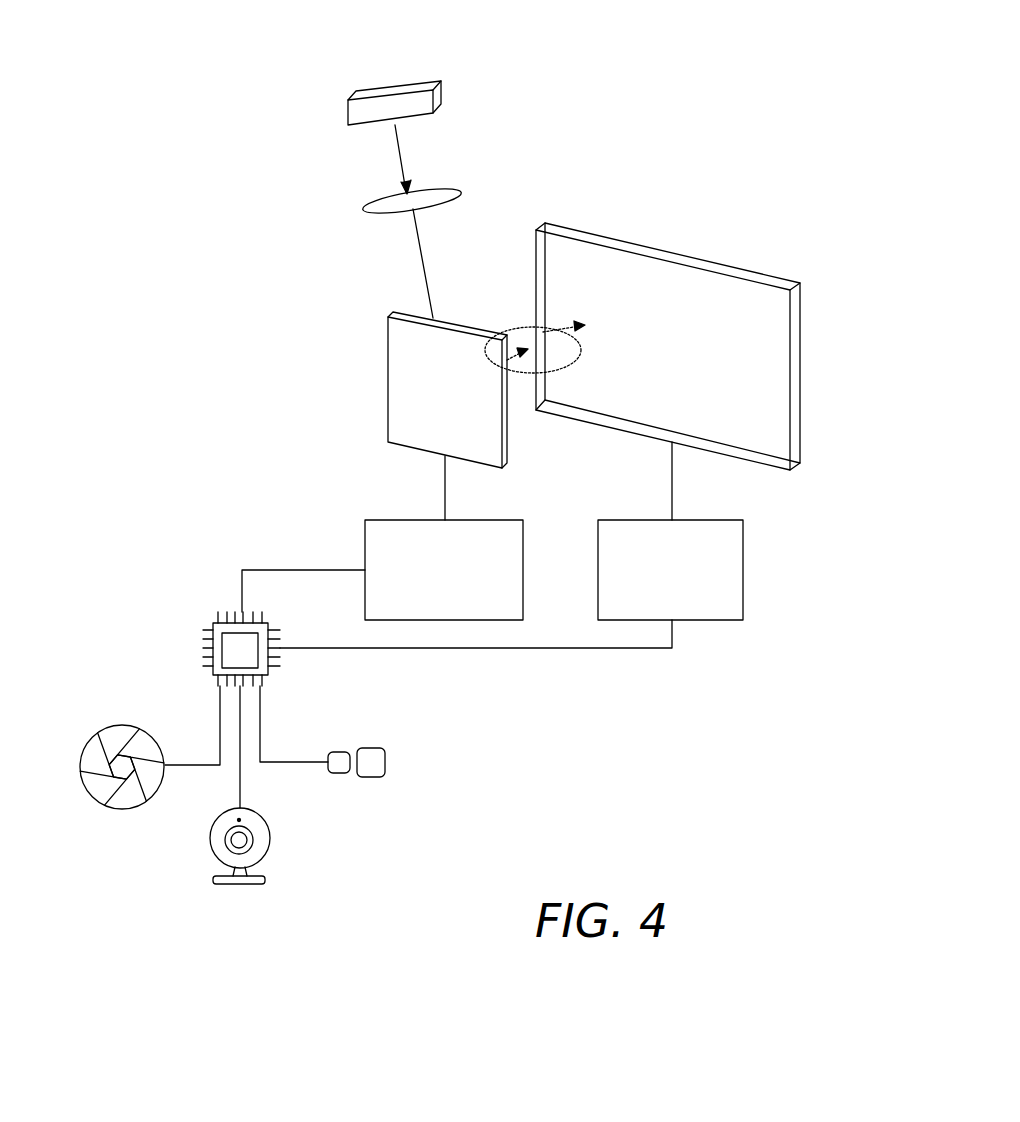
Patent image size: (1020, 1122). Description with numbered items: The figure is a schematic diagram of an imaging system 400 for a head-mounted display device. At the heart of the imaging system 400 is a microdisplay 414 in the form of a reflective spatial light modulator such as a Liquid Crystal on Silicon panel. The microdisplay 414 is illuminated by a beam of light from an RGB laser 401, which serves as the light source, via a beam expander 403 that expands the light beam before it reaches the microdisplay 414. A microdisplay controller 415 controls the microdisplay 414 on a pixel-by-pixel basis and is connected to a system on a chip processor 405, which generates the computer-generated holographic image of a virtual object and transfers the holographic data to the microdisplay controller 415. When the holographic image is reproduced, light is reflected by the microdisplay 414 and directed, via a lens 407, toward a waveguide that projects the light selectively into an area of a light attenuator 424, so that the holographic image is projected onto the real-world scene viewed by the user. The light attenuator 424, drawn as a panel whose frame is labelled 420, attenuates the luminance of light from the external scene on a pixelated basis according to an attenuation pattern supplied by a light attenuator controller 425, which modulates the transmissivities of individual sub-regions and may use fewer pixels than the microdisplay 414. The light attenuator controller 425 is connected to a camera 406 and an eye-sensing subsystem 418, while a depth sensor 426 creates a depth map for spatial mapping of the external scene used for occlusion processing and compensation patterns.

The imaging system 400 is at (114, 257).
The RGB laser 401 is at (398, 83).
The beam expander 403 is at (362, 210).
The system on a chip (SoC) processor 405 is at (196, 650).
The camera 406 is at (122, 810).
The lens 407 is at (537, 326).
The microdisplay 414 is at (440, 320).
The microdisplay controller 415 is at (382, 570).
The eye-sensing subsystem 418 is at (240, 886).
The attenuator 420 is at (605, 233).
The light attenuator 424 is at (710, 258).
The light attenuator controller 425 is at (511, 584).
The depth sensor 426 is at (357, 780).